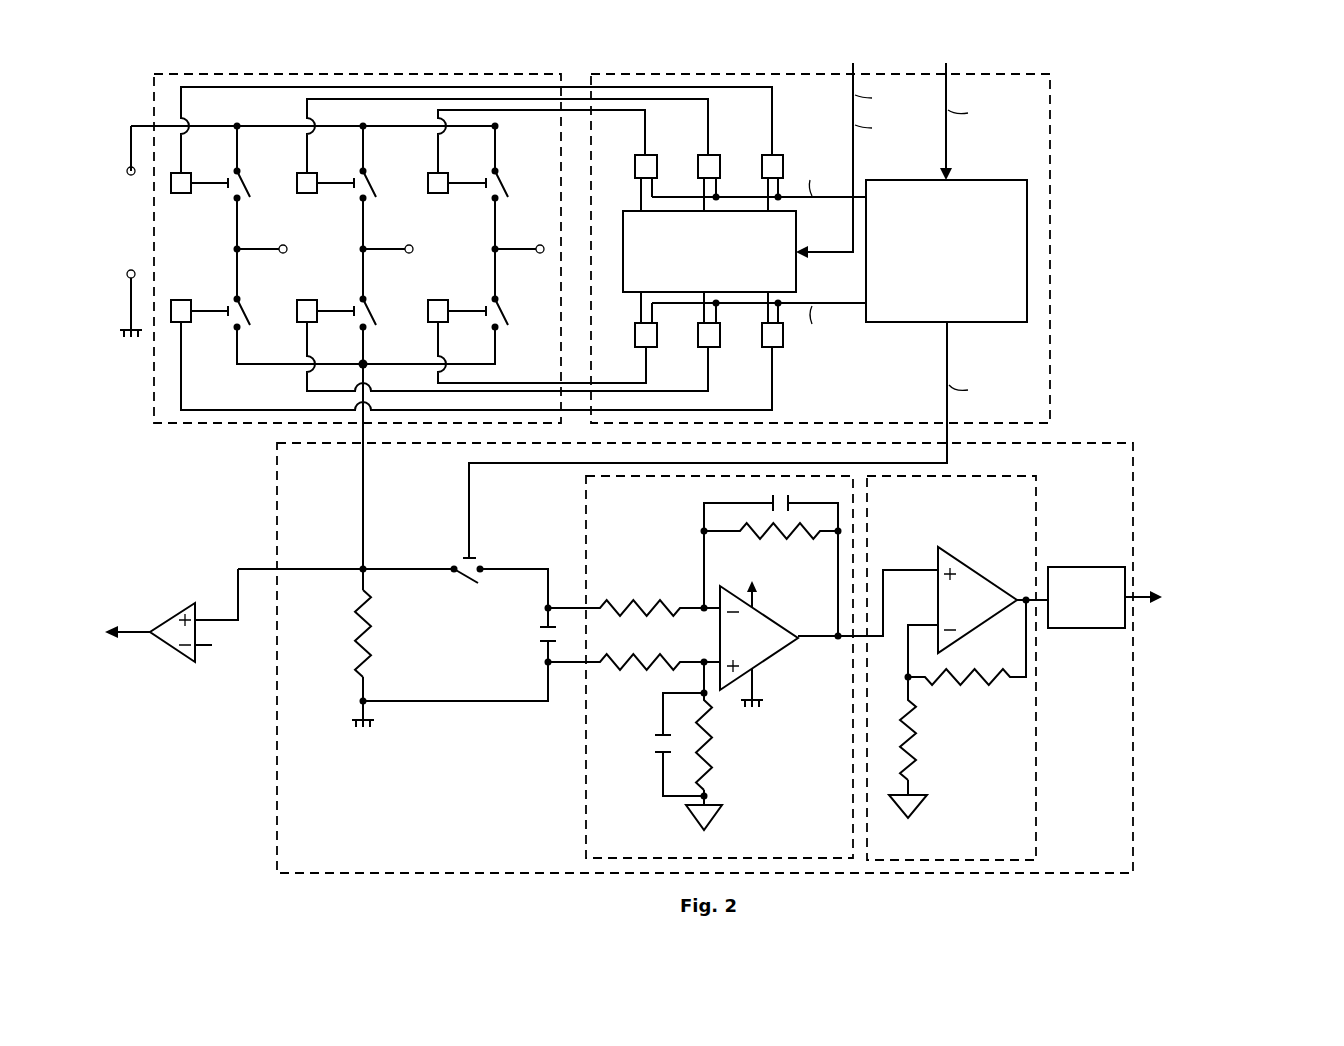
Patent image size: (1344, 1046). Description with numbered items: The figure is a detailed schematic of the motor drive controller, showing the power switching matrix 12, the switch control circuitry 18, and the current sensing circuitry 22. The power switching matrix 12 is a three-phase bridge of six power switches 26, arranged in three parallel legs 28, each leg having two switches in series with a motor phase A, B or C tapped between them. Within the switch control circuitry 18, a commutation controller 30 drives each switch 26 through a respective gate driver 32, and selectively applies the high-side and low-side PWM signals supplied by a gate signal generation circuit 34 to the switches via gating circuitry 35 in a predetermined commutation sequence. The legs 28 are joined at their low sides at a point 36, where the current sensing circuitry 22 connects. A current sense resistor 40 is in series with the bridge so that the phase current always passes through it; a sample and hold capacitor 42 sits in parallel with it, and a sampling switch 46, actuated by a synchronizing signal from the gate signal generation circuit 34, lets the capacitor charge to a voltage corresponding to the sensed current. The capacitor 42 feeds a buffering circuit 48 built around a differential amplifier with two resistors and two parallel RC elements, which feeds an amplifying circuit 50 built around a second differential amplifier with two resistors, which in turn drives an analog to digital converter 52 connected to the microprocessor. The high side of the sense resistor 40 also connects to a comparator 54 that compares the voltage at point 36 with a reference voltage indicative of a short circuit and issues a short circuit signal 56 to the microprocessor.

The power switching matrix 12 is at (201, 425).
The switch control circuitry 18 is at (1052, 378).
The current sensing circuitry 22 is at (277, 738).
The power switches 26 is at (372, 163).
The legs 28 is at (224, 259).
The commutation controller 30 is at (798, 240).
The gate drivers 32 is at (188, 173).
The gate signal generation circuit 34 is at (905, 180).
The gating circuitry 35 is at (652, 155).
The point 36 is at (366, 362).
The current sense resistor 40 is at (354, 611).
The sample and hold capacitor 42 is at (546, 647).
The sampling switch 46 is at (443, 556).
The buffering circuit 48 is at (586, 756).
The amplifying circuit 50 is at (1037, 830).
The analog to digital converter 52 is at (1065, 567).
The comparator 54 is at (177, 606).
The short circuit signal 56 is at (132, 630).